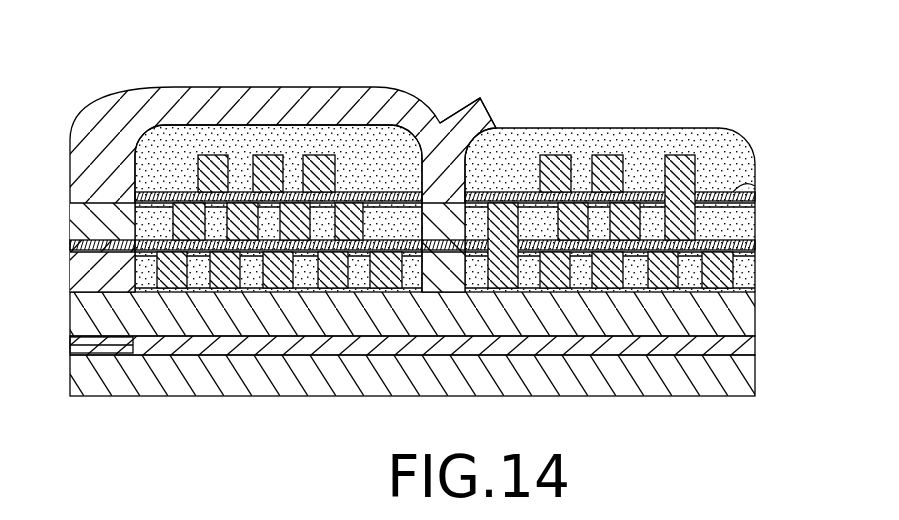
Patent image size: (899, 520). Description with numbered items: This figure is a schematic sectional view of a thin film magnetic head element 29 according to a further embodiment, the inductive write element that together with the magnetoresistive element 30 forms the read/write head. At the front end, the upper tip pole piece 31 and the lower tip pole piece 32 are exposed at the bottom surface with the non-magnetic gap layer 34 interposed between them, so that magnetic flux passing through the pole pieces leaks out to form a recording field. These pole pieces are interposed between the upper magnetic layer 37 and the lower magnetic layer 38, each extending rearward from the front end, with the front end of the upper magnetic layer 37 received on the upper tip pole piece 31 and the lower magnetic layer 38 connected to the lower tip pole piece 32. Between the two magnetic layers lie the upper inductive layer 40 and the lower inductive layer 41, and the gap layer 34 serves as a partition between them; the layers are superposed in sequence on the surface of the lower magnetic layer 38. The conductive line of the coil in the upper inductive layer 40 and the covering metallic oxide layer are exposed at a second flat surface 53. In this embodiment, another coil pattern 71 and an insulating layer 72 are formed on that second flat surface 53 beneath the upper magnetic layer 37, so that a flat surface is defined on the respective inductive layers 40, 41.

The thin film magnetic head element 29 is at (570, 98).
The magnetoresistive (MR) element 30 is at (70, 352).
The upper tip pole piece 31 is at (70, 207).
The lower tip pole piece 32 is at (70, 273).
The gap layer 34 is at (70, 247).
The upper magnetic layer 37 is at (70, 185).
The lower magnetic layer 38 is at (70, 317).
The upper inductive layer 40 is at (773, 235).
The lower inductive layer 41 is at (775, 282).
The second flat surface 53 is at (746, 185).
The coil pattern 71 is at (607, 157).
The insulating layer 72 is at (740, 137).